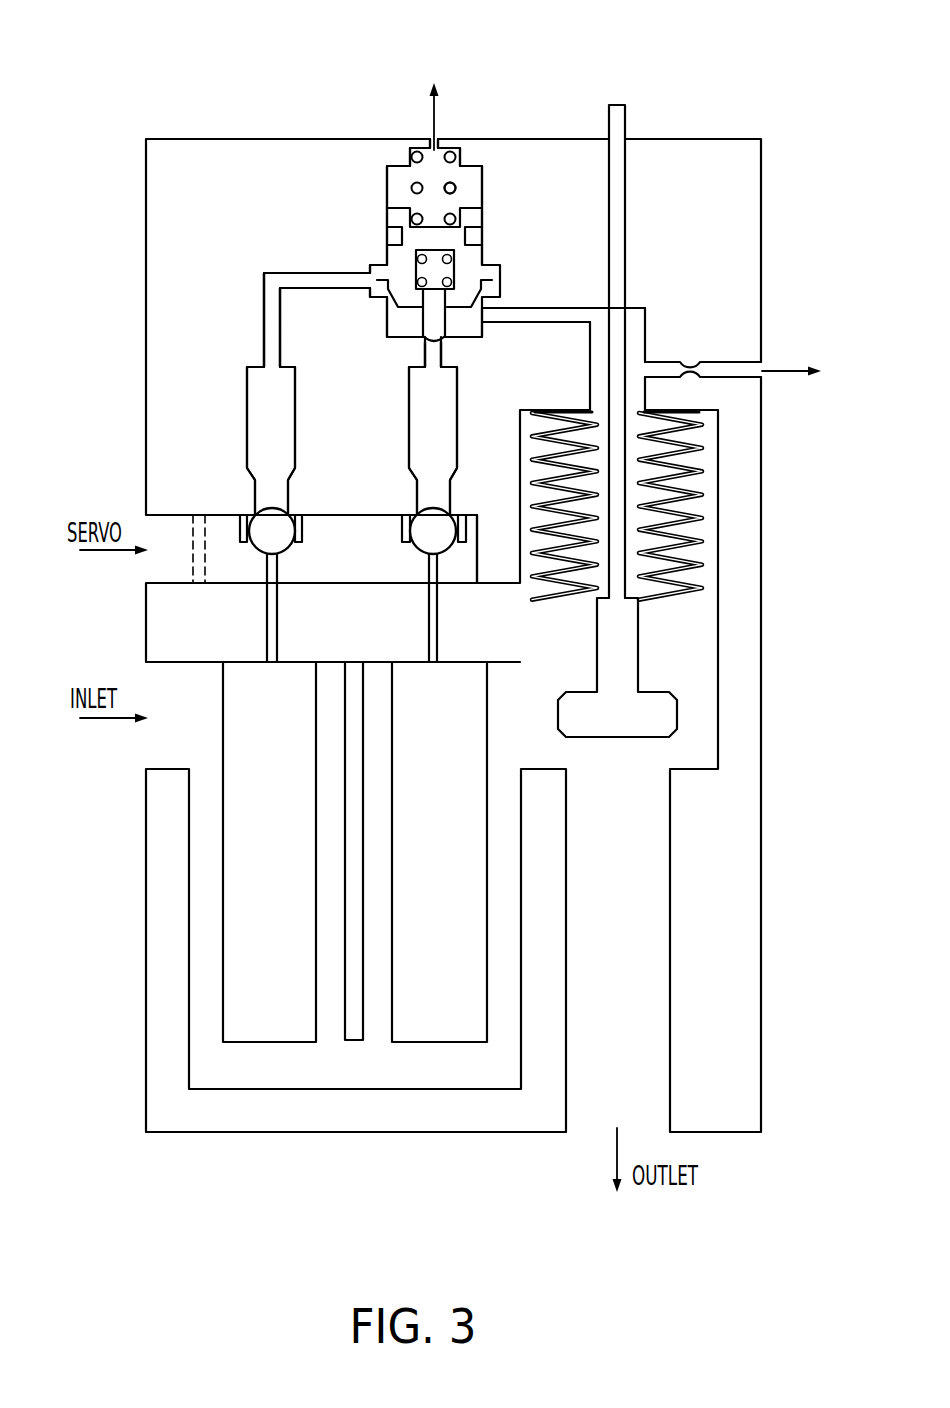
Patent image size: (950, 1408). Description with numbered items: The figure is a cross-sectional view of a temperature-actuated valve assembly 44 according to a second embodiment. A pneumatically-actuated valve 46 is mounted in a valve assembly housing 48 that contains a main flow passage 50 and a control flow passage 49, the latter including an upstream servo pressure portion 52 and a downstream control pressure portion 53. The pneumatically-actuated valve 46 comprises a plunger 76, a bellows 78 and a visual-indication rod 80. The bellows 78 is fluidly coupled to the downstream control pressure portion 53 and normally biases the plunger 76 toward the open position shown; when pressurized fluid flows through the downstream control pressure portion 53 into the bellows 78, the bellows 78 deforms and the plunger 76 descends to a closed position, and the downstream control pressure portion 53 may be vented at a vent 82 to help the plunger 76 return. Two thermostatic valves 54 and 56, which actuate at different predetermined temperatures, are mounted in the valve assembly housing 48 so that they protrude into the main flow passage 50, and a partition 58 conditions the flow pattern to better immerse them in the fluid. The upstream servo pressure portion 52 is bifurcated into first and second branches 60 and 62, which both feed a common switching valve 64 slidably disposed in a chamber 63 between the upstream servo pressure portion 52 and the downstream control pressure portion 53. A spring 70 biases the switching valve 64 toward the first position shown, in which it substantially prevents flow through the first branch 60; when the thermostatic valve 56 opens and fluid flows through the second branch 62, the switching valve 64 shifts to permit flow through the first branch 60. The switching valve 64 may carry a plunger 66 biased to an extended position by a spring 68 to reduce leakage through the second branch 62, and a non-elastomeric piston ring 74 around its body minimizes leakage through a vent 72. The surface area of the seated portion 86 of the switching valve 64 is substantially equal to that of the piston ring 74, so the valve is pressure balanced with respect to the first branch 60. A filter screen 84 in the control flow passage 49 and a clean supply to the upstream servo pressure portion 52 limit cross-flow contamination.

The temperature-actuated valve assembly 44 is at (102, 98).
The pneumatically-actuated valve 46 is at (543, 395).
The valve assembly housing 48 is at (150, 316).
The control flow passage 49 is at (243, 255).
The main flow passage 50 is at (472, 1126).
The upstream servo pressure portion 52 is at (352, 529).
The downstream control pressure portion 53 is at (568, 309).
The thermostatic valve 54 is at (290, 885).
The thermostatic valve 56 is at (460, 885).
The partition 58 is at (355, 1041).
The first branch 60 is at (247, 427).
The second branch 62 is at (409, 427).
The chamber 63 is at (397, 172).
The switching valve 64 is at (360, 208).
The plunger 66 is at (428, 336).
The spring 68 is at (416, 279).
The spring 70 is at (456, 188).
The vent 72 is at (437, 143).
The piston ring 74 is at (480, 234).
The plunger 76 is at (633, 683).
The bellows 78 is at (703, 538).
The visual-indication rod 80 is at (618, 105).
The vent 82 is at (762, 367).
The filter screen 84 is at (198, 585).
The seated portion 86 is at (386, 300).